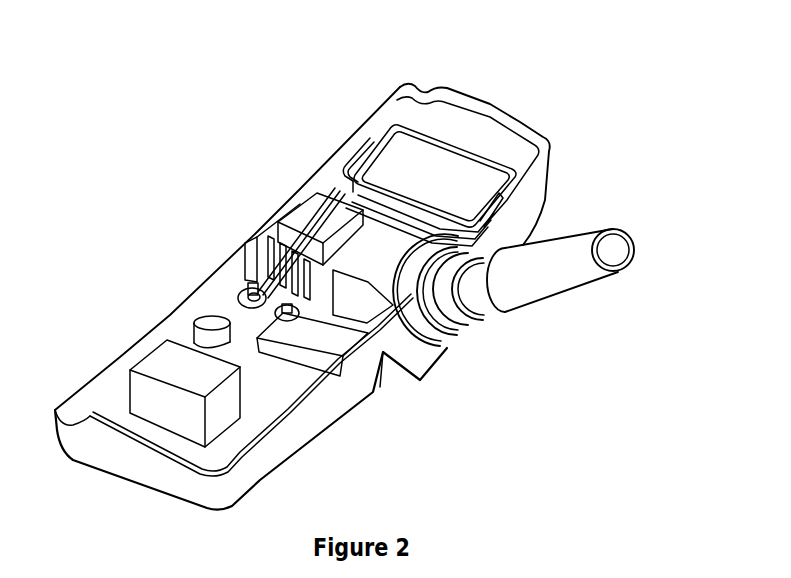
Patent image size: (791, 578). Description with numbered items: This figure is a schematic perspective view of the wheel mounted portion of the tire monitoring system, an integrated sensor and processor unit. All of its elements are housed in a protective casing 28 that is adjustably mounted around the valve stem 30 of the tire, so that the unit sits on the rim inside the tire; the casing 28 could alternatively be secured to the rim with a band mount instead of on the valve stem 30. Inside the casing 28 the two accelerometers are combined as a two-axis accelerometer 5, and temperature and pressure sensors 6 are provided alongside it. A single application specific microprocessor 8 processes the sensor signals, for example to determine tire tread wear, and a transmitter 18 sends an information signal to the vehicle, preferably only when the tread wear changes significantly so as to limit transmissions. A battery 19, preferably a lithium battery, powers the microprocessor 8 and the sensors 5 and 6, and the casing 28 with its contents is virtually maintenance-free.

The two-axis accelerometer 5 is at (147, 385).
The temperature and pressure sensors 6 is at (207, 323).
The microprocessor 8 is at (323, 343).
The transmitter 18 is at (247, 285).
The battery 19 is at (445, 147).
The casing 28 is at (555, 175).
The valve stem 30 is at (632, 237).